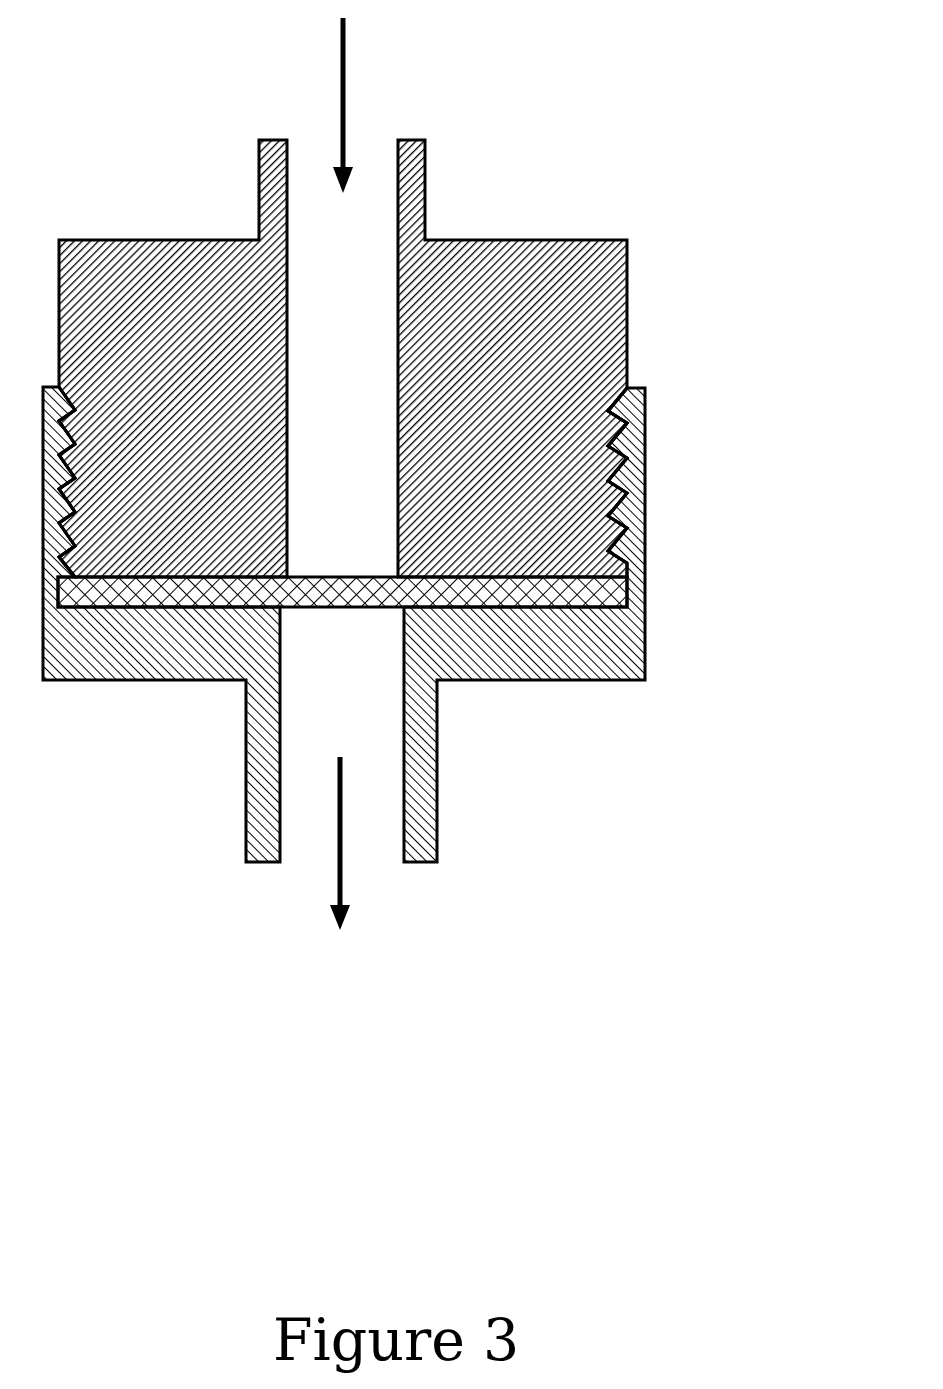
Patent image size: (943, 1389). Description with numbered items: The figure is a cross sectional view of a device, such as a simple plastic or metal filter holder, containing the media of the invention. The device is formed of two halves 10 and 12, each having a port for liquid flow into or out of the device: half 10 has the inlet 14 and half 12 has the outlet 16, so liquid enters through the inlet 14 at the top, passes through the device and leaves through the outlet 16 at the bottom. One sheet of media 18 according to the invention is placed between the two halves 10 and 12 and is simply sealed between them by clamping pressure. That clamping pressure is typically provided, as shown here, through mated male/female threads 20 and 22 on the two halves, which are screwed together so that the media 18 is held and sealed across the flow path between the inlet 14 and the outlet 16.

The half 10 is at (550, 278).
The half 12 is at (608, 650).
The inlet 14 is at (365, 222).
The outlet 16 is at (357, 730).
The sheet of media 18 is at (335, 595).
The male thread 20 is at (613, 517).
The female thread 22 is at (605, 470).